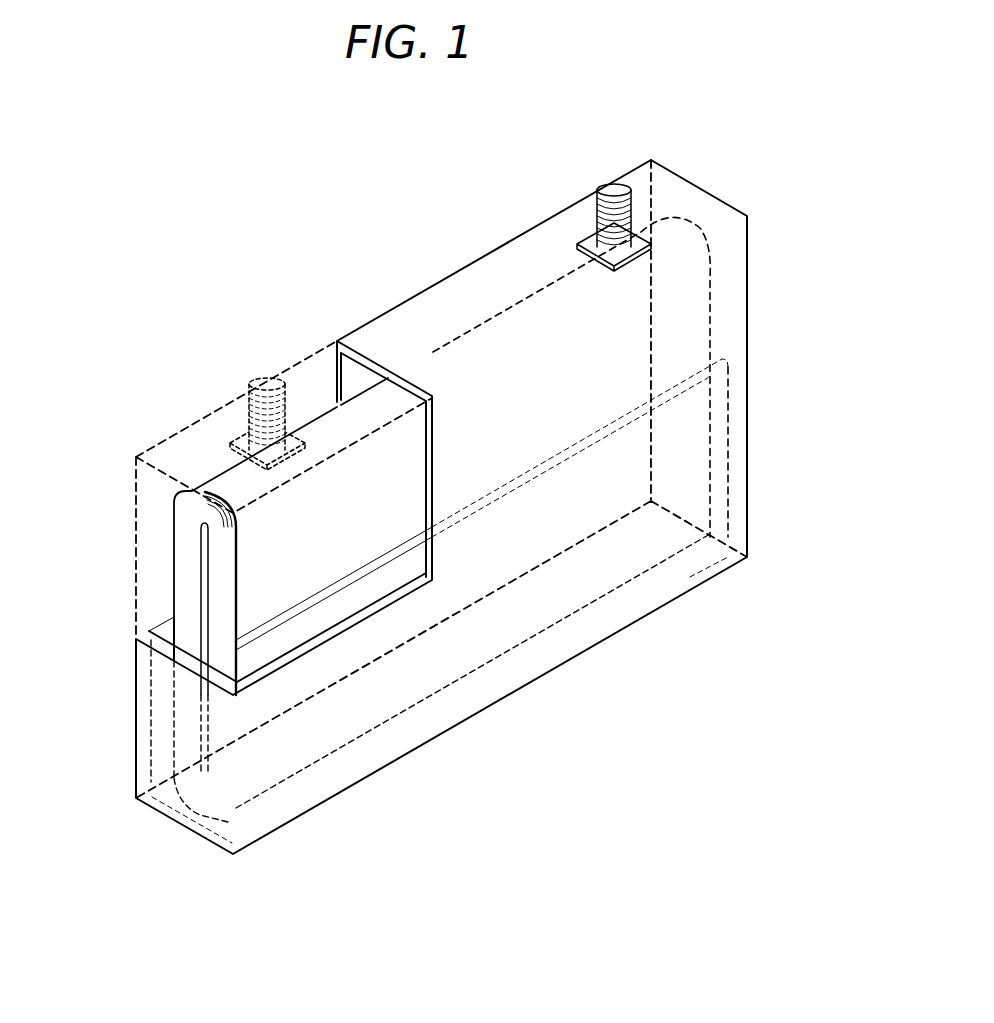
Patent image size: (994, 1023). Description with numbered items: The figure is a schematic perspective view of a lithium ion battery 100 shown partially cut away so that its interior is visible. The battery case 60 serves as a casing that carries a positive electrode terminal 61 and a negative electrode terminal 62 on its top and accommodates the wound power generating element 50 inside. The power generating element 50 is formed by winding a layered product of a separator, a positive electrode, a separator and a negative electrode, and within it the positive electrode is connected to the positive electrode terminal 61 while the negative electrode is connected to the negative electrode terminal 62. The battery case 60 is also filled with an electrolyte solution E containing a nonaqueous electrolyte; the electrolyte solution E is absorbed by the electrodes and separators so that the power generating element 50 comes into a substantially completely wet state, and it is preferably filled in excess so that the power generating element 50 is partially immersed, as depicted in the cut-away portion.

The lithium ion battery 100 is at (705, 124).
The battery case 60 is at (703, 211).
The power generating element 50 is at (188, 553).
The electrolyte solution E is at (175, 617).
The positive electrode terminal 61 is at (246, 402).
The negative electrode terminal 62 is at (596, 192).